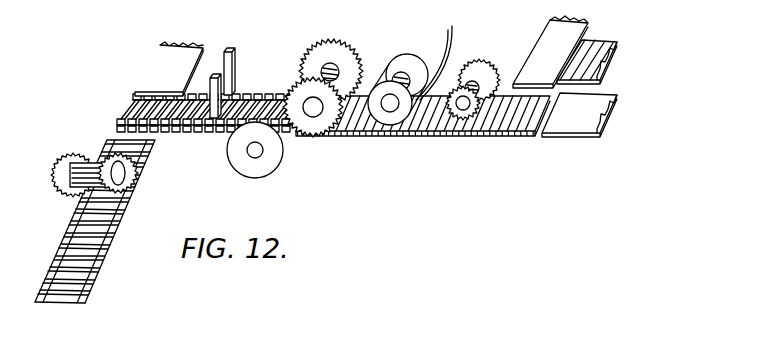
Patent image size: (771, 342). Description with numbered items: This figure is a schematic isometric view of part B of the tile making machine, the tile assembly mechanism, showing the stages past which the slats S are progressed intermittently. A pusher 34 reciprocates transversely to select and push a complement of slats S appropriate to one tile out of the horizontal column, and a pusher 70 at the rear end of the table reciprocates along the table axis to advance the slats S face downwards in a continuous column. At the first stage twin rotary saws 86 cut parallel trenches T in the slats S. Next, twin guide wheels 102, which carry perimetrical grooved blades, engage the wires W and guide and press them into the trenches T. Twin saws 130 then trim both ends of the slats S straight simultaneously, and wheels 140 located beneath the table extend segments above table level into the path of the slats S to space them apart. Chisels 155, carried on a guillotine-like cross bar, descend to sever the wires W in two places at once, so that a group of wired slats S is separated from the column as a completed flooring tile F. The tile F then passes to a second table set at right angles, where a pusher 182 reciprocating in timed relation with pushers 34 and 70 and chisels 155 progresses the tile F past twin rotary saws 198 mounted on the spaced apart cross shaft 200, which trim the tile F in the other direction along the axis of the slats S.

The pusher 182 is at (151, 72).
The chisels 155 is at (216, 76).
The twin saws 130 is at (317, 57).
The slats S is at (284, 82).
The twin guide wheels 102 is at (384, 84).
The part B of the machine B is at (412, 50).
The wires W is at (358, 150).
The twin rotary saws 86 is at (468, 80).
The pusher 34 is at (541, 37).
The twin rotary saws 198 is at (74, 159).
The cross shaft 200 is at (62, 182).
The flooring tile F is at (112, 236).
The wheels 140 is at (290, 149).
The trenches T is at (418, 133).
The pusher 70 is at (567, 132).